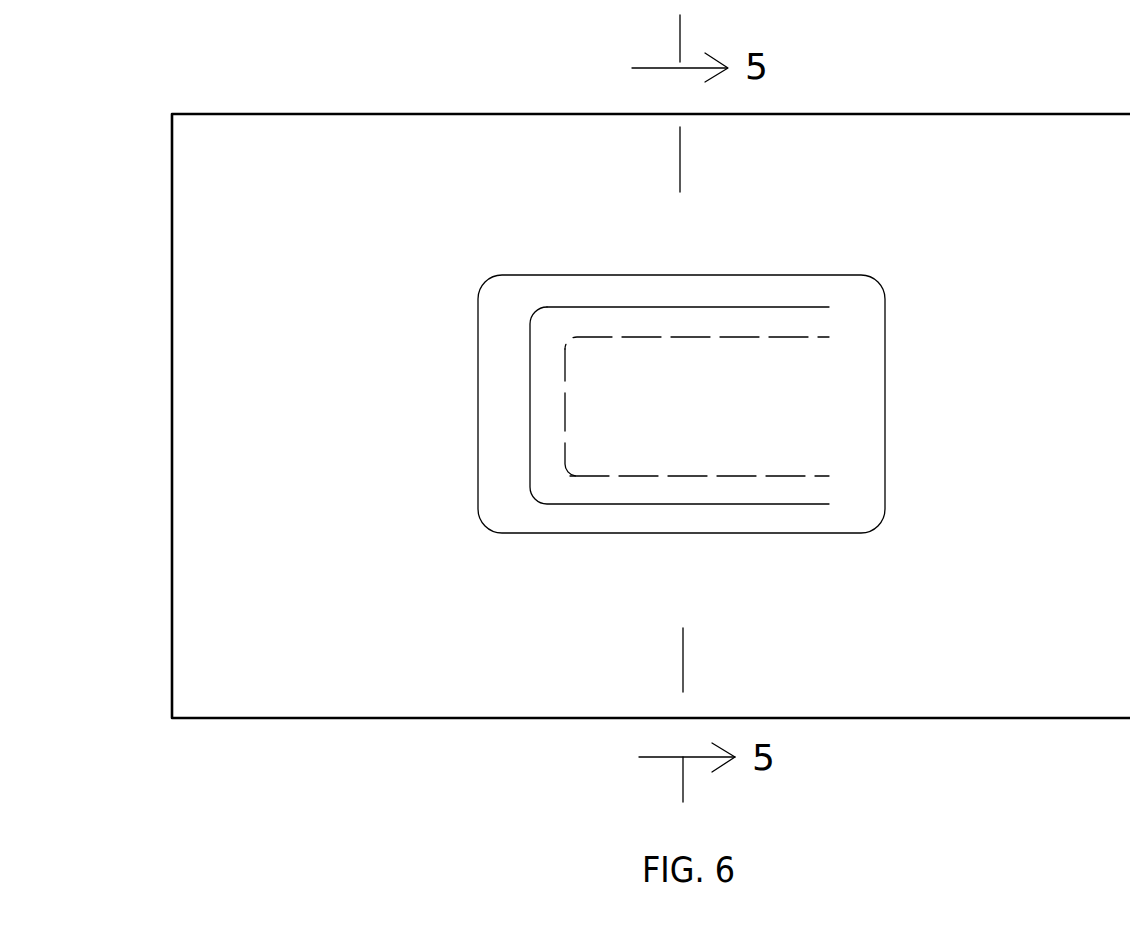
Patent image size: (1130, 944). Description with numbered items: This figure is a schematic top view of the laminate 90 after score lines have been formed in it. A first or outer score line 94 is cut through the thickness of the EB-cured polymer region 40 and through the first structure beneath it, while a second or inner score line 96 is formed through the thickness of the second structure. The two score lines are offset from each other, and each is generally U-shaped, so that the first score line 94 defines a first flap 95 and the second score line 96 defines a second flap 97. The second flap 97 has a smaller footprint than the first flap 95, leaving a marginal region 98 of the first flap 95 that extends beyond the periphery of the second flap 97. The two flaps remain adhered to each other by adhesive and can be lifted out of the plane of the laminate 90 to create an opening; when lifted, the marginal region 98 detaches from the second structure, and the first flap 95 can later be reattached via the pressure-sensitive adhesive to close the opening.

The laminate 90 is at (395, 723).
The EB-cured polymer region 40 is at (872, 493).
The first score line 94 is at (676, 307).
The first flap 95 is at (533, 388).
The second score line 96 is at (685, 477).
The second flap 97 is at (570, 461).
The marginal region 98 is at (633, 322).